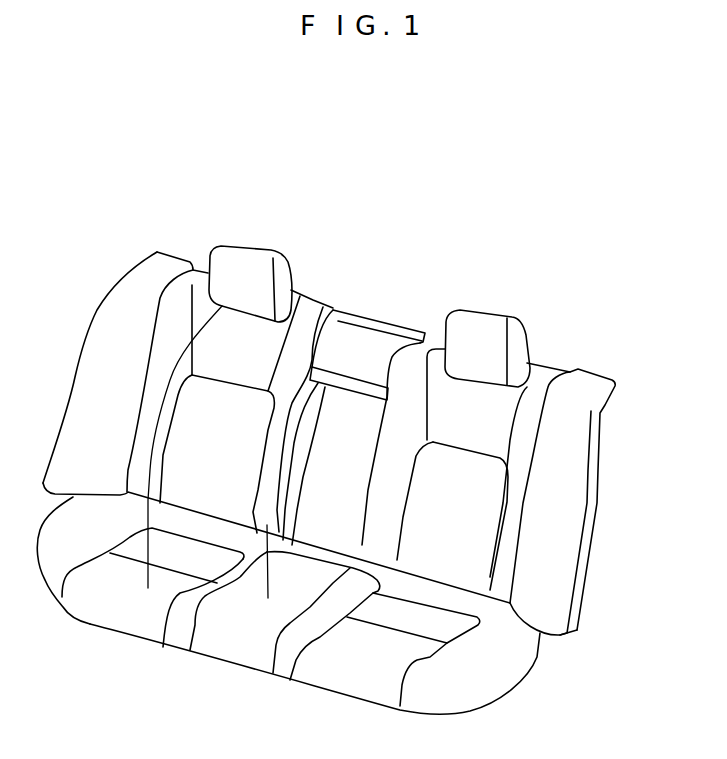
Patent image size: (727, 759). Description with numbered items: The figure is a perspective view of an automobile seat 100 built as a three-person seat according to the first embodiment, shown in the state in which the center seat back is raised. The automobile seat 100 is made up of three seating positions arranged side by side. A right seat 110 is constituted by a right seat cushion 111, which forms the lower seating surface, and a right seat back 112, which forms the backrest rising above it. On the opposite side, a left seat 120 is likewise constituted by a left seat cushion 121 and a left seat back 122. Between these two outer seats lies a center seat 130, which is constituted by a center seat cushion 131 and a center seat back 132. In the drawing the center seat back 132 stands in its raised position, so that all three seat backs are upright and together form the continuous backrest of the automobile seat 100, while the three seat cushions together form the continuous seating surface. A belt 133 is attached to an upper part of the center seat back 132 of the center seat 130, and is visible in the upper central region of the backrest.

The automobile seat 100 is at (684, 353).
The right seat 110 is at (302, 212).
The right seat cushion 111 is at (228, 410).
The right seat back 112 is at (222, 392).
The left seat 120 is at (577, 293).
The left seat cushion 121 is at (477, 467).
The left seat back 122 is at (393, 647).
The center seat 130 is at (429, 250).
The center seat cushion 131 is at (343, 423).
The center seat back 132 is at (340, 380).
The belt 133 is at (363, 563).